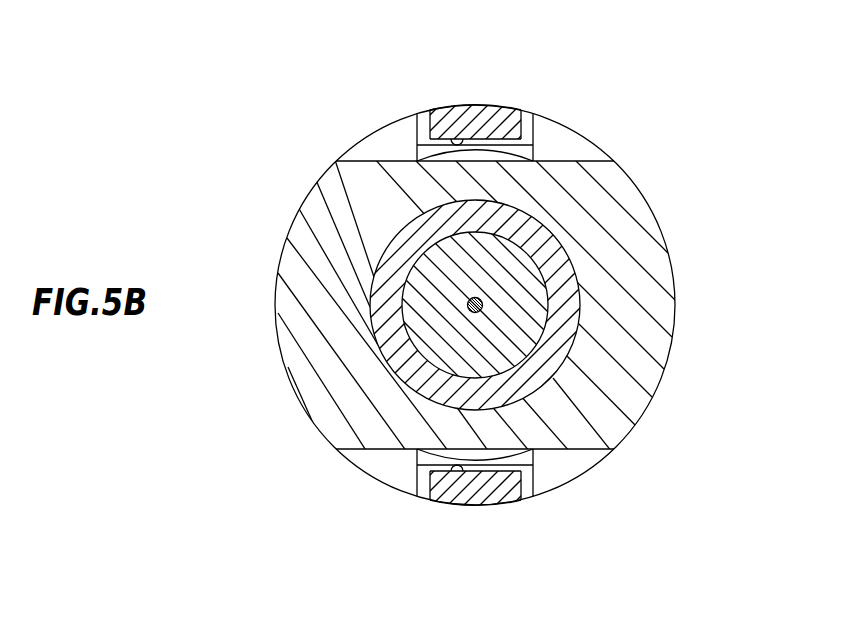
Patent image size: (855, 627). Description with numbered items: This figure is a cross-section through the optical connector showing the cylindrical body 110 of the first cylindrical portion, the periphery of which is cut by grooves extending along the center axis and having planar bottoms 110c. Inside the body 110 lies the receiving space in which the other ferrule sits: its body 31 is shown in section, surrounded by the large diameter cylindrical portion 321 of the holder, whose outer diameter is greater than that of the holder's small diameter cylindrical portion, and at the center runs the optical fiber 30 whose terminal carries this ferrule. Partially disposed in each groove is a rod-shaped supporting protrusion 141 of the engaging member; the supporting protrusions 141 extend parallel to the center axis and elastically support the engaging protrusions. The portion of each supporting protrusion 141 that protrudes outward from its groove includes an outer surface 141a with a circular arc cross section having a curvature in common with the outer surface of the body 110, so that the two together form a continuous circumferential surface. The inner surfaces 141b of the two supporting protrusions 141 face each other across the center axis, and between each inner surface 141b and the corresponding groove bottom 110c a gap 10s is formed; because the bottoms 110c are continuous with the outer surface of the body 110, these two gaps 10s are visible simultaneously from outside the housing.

The body 110 is at (632, 220).
The bottoms of the grooves 110c is at (573, 160).
The gaps 10s is at (497, 152).
The supporting protrusions 141 is at (498, 115).
The outer surfaces 141a is at (462, 105).
The inner surfaces 141b is at (452, 142).
The large diameter cylindrical portion 321 is at (562, 285).
The body 31 is at (500, 355).
The optical fiber 30 is at (470, 302).